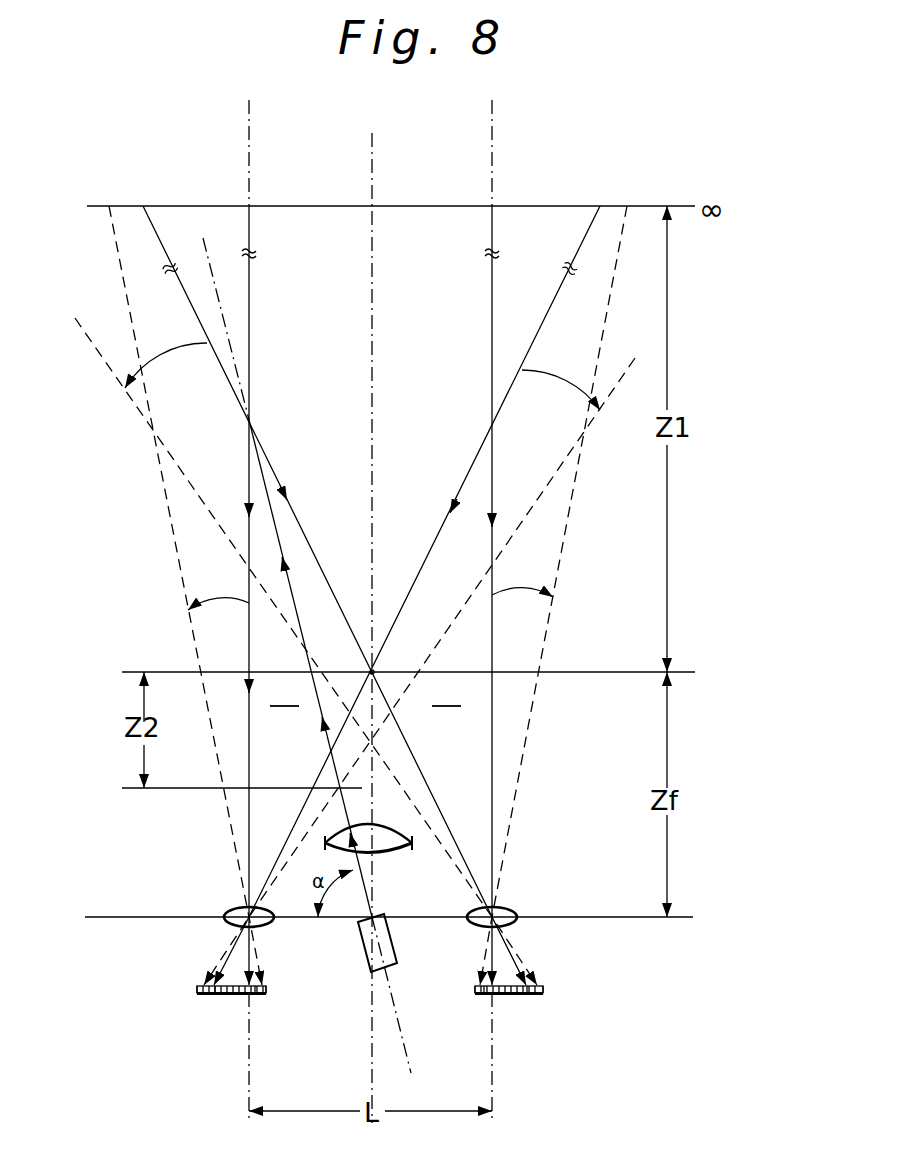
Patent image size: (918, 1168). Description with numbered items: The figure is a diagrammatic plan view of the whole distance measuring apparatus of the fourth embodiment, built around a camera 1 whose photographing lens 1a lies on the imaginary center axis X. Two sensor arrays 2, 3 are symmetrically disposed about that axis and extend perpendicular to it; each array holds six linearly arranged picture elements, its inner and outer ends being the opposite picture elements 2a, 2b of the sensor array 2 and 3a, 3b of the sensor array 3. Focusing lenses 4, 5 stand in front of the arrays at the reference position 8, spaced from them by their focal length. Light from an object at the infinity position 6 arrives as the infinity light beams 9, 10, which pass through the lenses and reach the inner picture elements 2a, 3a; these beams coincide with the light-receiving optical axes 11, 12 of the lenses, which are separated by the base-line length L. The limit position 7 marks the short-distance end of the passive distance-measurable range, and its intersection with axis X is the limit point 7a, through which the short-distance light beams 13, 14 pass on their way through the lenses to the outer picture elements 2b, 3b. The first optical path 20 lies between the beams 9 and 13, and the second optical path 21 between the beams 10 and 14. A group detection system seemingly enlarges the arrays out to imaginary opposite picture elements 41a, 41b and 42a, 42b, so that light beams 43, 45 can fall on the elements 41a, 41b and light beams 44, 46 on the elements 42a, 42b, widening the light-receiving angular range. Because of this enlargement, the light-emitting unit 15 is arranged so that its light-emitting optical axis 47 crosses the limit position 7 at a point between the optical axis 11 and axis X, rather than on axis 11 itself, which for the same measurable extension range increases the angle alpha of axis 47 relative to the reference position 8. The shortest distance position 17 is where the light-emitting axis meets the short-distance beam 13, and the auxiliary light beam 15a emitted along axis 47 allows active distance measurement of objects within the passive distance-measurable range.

The camera 1 is at (370, 1076).
The photographing lens 1a is at (383, 832).
The sensor array 2 is at (190, 985).
The picture element 2a is at (255, 995).
The picture element 2b is at (215, 995).
The sensor array 3 is at (558, 988).
The picture element 3a is at (484, 995).
The picture element 3b is at (527, 995).
The focusing lens 4 is at (234, 908).
The focusing lens 5 is at (510, 908).
The infinity position 6 is at (664, 206).
The limit position 7 is at (605, 668).
The limit point 7a is at (382, 663).
The reference position 8 is at (600, 915).
The infinity light beam 9 is at (251, 303).
The infinity light beam 10 is at (490, 313).
The light-receiving optical axis 11 is at (252, 152).
The light-receiving optical axis 12 is at (495, 155).
The short-distance light beam 13 is at (552, 310).
The short-distance light beam 14 is at (189, 303).
The light-emitting unit 15 is at (397, 951).
The auxiliary light beam 15a is at (345, 812).
The shortest distance position 17 is at (130, 786).
The first optical path 20 is at (287, 692).
The second optical path 21 is at (449, 692).
The imaginary picture element 41a is at (268, 993).
The imaginary picture element 41b is at (197, 991).
The imaginary picture element 42a is at (477, 991).
The imaginary picture element 42b is at (544, 993).
The light beam 43 is at (165, 505).
The light beam 44 is at (568, 535).
The light beam 45 is at (495, 565).
The light beam 46 is at (203, 500).
The light-emitting optical axis 47 is at (214, 275).